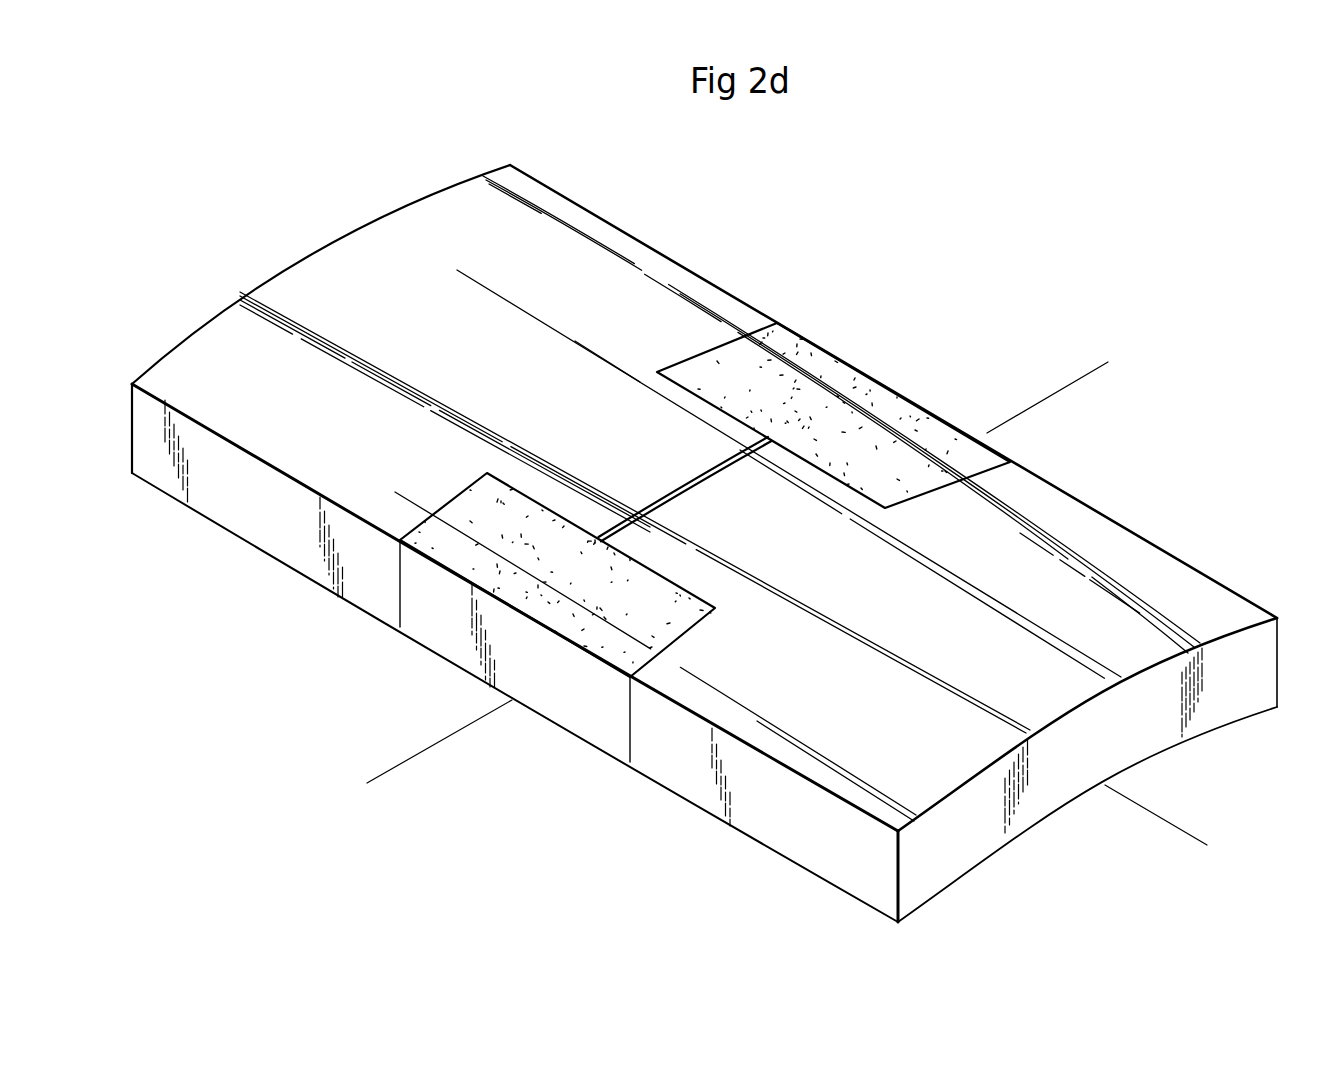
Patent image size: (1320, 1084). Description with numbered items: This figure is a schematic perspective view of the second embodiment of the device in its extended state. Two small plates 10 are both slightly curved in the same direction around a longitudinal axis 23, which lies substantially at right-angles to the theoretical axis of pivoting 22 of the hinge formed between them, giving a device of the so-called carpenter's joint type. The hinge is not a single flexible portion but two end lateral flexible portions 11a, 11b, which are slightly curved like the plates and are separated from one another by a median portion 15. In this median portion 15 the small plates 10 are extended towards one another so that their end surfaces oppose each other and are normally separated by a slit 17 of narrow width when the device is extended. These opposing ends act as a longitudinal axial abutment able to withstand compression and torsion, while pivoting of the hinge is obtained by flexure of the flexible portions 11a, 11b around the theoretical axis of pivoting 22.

The median portion 15 is at (325, 221).
The small plates 10 is at (606, 292).
The slit 17 is at (693, 476).
The end lateral flexible portion 11a is at (840, 398).
The end lateral flexible portion 11b is at (478, 572).
The theoretical axis of pivoting 22 is at (422, 750).
The longitudinal axis 23 is at (1170, 827).